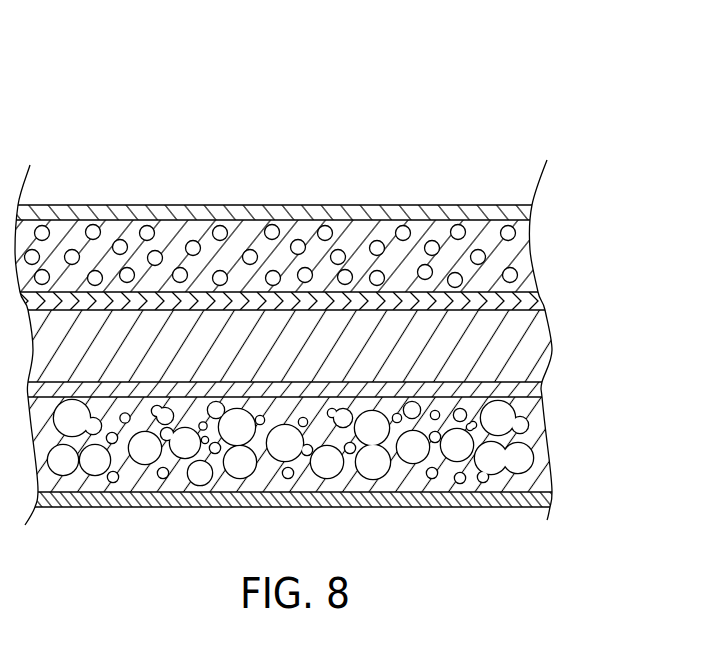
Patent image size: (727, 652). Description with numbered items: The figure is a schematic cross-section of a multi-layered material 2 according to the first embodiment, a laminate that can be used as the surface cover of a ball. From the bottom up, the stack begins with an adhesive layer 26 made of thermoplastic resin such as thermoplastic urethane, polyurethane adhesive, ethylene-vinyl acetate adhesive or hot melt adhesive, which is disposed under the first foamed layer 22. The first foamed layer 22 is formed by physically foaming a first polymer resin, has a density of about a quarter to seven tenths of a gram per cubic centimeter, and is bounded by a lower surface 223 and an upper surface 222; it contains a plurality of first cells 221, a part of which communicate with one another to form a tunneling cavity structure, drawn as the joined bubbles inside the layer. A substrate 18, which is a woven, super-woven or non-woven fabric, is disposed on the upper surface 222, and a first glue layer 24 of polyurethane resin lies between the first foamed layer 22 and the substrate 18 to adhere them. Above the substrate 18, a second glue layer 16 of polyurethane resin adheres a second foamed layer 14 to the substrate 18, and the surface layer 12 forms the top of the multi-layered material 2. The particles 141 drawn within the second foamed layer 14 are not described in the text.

The multi-layered material 2 is at (552, 133).
The surface layer 12 is at (532, 212).
The second foamed layer 14 is at (312, 256).
The diffusing particles 141 is at (506, 270).
The second glue layer 16 is at (543, 297).
The substrate 18 is at (538, 347).
The first foamed layer 22 is at (315, 444).
The first cells 221 is at (502, 422).
The upper surface 222 is at (518, 383).
The lower surface 223 is at (502, 503).
The first glue layer 24 is at (545, 383).
The adhesive layer 26 is at (552, 497).